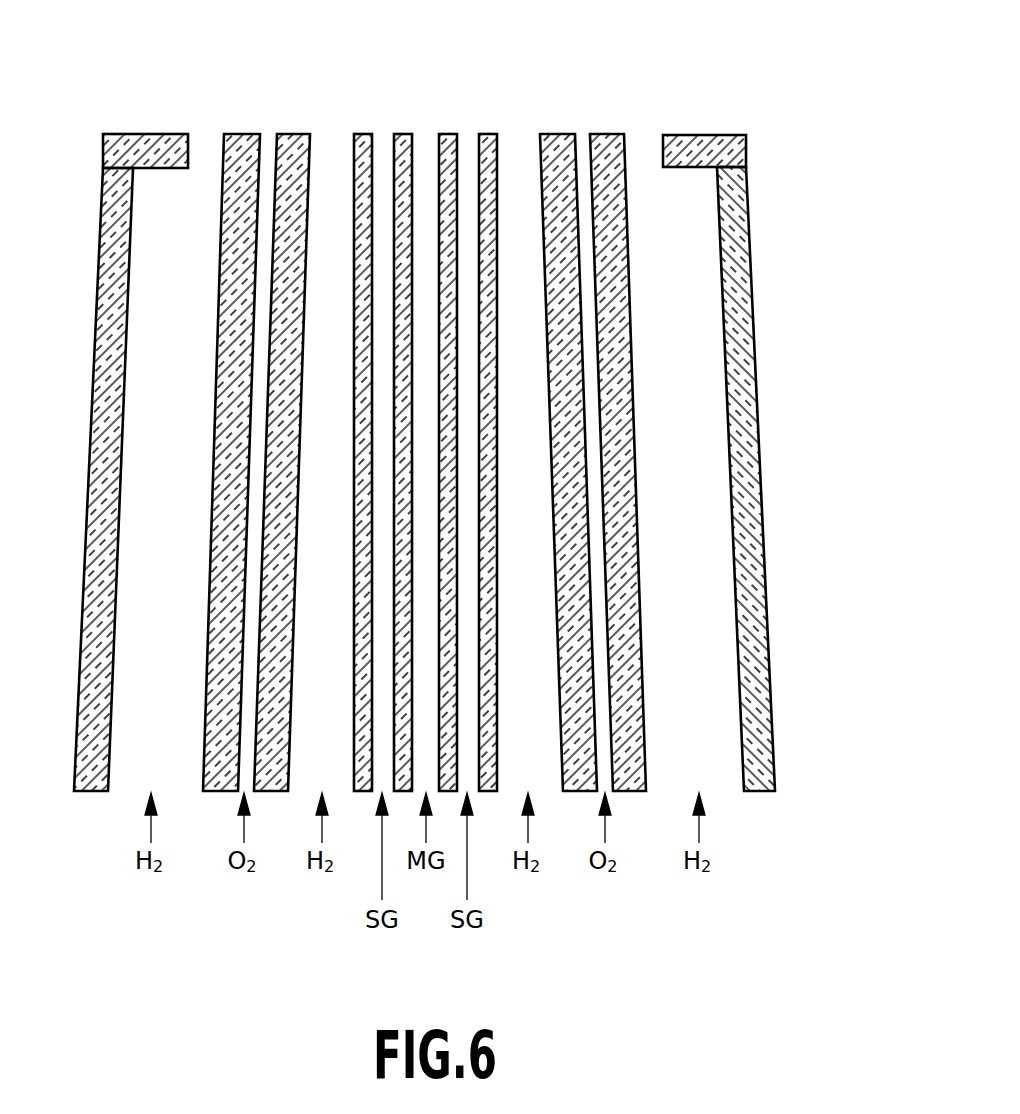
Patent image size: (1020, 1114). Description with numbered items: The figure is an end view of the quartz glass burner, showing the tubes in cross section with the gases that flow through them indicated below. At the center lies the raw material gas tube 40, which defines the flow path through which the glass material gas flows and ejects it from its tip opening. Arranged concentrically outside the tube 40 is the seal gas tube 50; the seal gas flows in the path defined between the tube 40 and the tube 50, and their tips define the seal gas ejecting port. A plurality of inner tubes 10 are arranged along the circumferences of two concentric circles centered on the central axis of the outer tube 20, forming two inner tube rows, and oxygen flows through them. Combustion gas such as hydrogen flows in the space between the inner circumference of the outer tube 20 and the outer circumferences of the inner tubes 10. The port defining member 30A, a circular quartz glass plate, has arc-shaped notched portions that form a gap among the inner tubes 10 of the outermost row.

The inner tube 10 is at (282, 97).
The outer tube 20 is at (745, 420).
The port defining member 30A is at (710, 135).
The raw material gas tube 40 is at (442, 97).
The seal gas tube 50 is at (488, 137).